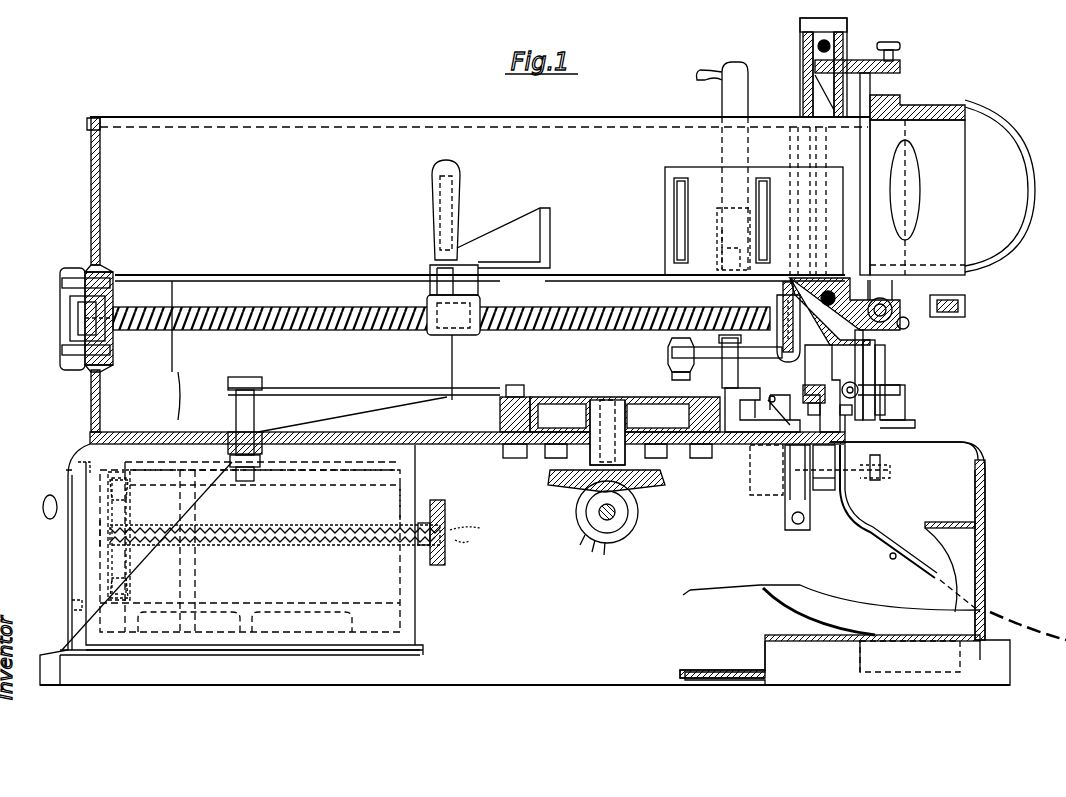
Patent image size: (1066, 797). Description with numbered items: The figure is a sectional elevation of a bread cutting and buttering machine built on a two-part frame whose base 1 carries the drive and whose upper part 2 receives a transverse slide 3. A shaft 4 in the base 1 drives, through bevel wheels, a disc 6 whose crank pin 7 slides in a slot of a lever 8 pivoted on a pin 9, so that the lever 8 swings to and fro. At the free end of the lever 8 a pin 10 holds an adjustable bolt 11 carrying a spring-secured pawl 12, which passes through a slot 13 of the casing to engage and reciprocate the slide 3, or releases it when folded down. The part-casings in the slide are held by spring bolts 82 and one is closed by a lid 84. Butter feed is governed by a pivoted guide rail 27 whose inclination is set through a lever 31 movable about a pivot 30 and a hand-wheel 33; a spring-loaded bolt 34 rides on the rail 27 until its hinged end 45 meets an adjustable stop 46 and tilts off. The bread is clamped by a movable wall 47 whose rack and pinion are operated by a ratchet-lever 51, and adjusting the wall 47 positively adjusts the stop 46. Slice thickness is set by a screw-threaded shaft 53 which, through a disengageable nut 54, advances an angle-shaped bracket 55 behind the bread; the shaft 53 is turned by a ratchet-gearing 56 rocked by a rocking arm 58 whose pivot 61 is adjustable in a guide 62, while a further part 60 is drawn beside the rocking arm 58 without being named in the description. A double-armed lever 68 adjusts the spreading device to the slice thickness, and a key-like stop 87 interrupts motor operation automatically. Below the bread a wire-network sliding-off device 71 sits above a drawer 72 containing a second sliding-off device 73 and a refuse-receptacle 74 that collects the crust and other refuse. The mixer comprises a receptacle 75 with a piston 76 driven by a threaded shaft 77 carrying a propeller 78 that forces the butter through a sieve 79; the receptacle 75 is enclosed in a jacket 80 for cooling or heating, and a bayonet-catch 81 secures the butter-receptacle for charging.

The base of the frame 1 is at (922, 95).
The upper part of the frame 2 is at (115, 393).
The transverse slide 3 is at (840, 75).
The shaft 4 is at (618, 512).
The disc 6 is at (555, 397).
The crank pin 7 is at (515, 405).
The lever 8 is at (355, 390).
The pin 9 is at (262, 453).
The pin 10 is at (815, 385).
The bolt 11 is at (790, 392).
The pawl 12 is at (900, 388).
The slot of the casing 13 is at (847, 418).
The guide rail 27 is at (905, 400).
The pivot 30 is at (810, 512).
The lever 31 is at (855, 480).
The hand-wheel 33 is at (882, 322).
The bolt 34 is at (909, 324).
The end of the bolt 45 is at (895, 365).
The adjustable stop 46 is at (900, 352).
The movable wall 47 is at (682, 176).
The ratchet-lever 51 is at (725, 96).
The screw-threaded shaft 53 is at (556, 330).
The disengageable nut 54 is at (482, 330).
The angle-shaped bracket 55 is at (550, 243).
The ratchet-gearing 56 is at (778, 330).
The rocking arm 58 is at (745, 388).
The post 60 is at (728, 355).
The pivot 61 is at (672, 352).
The guide 62 is at (895, 50).
The double-armed lever 68 is at (965, 304).
The sliding-off device 71 is at (884, 552).
The drawer 72 is at (898, 635).
The sliding-off device 73 is at (790, 590).
The refuse-receptacle 74 is at (672, 632).
The receptacle 75 is at (231, 556).
The piston 76 is at (197, 590).
The shaft 77 is at (305, 527).
The propeller 78 is at (118, 502).
The sieve 79 is at (92, 545).
The jacket 80 is at (160, 630).
The bayonet-catch 81 is at (72, 603).
The spring bolts 82 is at (78, 468).
The lid 84 is at (1008, 157).
The key-like stop 87 is at (800, 282).